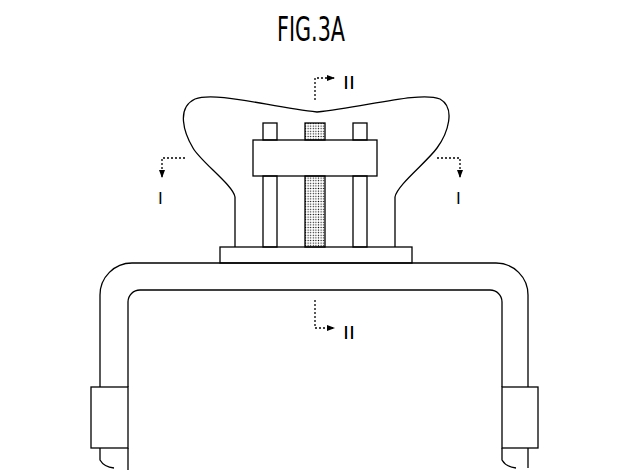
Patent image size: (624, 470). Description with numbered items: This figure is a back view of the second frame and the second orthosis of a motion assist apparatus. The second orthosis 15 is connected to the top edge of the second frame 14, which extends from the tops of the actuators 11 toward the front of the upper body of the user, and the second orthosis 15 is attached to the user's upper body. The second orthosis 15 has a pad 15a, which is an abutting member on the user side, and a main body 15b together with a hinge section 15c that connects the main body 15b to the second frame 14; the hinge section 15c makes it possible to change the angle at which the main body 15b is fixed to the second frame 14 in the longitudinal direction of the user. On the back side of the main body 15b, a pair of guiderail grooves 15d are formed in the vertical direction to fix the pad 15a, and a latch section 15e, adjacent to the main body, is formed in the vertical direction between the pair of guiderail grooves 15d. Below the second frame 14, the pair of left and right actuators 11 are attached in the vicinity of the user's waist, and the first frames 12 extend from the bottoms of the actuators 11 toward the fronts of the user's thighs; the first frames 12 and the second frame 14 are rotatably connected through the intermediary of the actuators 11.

The second orthosis 15 is at (484, 112).
The pad 15a is at (255, 157).
The main body 15b is at (218, 98).
The hinge section 15c is at (236, 257).
The guiderail grooves 15d is at (264, 225).
The latch section 15e is at (328, 233).
The second frame 14 is at (529, 347).
The actuators 11 is at (90, 417).
The first frames 12 is at (100, 457).